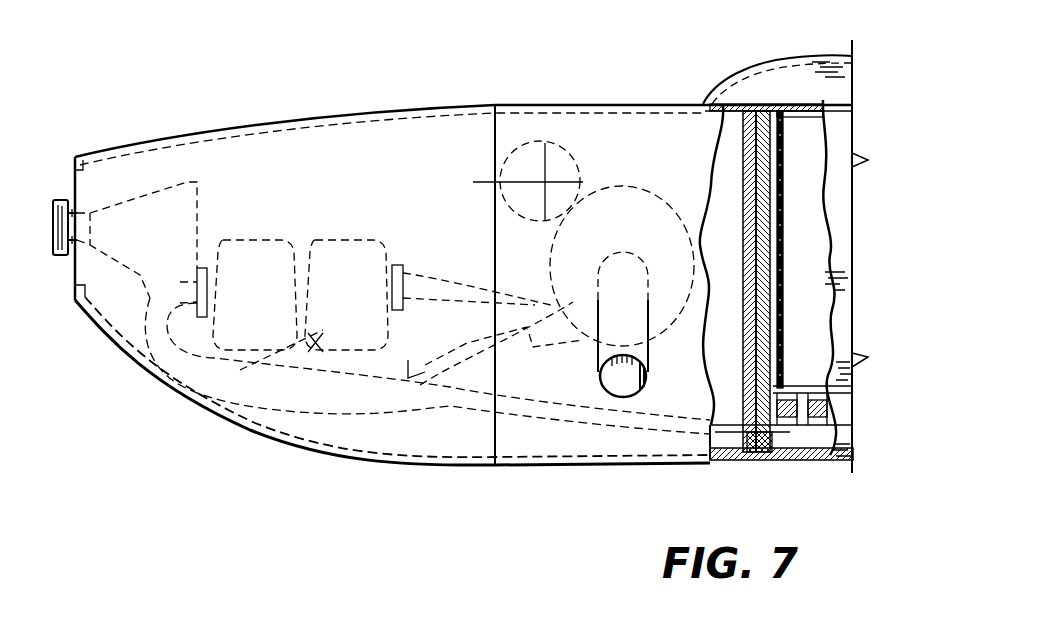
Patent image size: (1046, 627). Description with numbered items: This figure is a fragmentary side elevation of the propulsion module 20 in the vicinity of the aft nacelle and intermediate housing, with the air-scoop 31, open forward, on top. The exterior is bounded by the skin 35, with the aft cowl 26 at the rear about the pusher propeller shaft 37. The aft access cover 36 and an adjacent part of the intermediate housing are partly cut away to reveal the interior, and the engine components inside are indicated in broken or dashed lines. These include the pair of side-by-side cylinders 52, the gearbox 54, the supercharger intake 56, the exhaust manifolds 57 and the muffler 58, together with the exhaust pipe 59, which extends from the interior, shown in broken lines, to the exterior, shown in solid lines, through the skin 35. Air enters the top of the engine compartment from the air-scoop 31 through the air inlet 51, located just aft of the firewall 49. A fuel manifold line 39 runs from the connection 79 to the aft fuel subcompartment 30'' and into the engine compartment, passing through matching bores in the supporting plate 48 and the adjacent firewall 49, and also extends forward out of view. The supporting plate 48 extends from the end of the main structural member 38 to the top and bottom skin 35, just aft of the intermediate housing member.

The propulsion module 20 is at (148, 95).
The aft cowl 26 is at (277, 157).
The aft access cover 36 is at (562, 127).
The pusher propeller shaft 37 is at (60, 257).
The gearbox 54 is at (182, 212).
The cylinders 52 is at (267, 312).
The exhaust manifolds 57 is at (470, 315).
The supercharger intake 56 is at (540, 137).
The muffler 58 is at (620, 207).
The exhaust pipe 59 is at (607, 393).
The air inlet 51 is at (683, 130).
The firewall 49 is at (750, 128).
The air-scoop 31 is at (790, 56).
The supporting plate 48 is at (772, 165).
The aft fuel subcompartment 30'' is at (800, 249).
The connection 79 is at (803, 386).
The fuel manifold line 39 is at (787, 427).
The main structural member 38 is at (828, 410).
The skin 35 is at (682, 457).